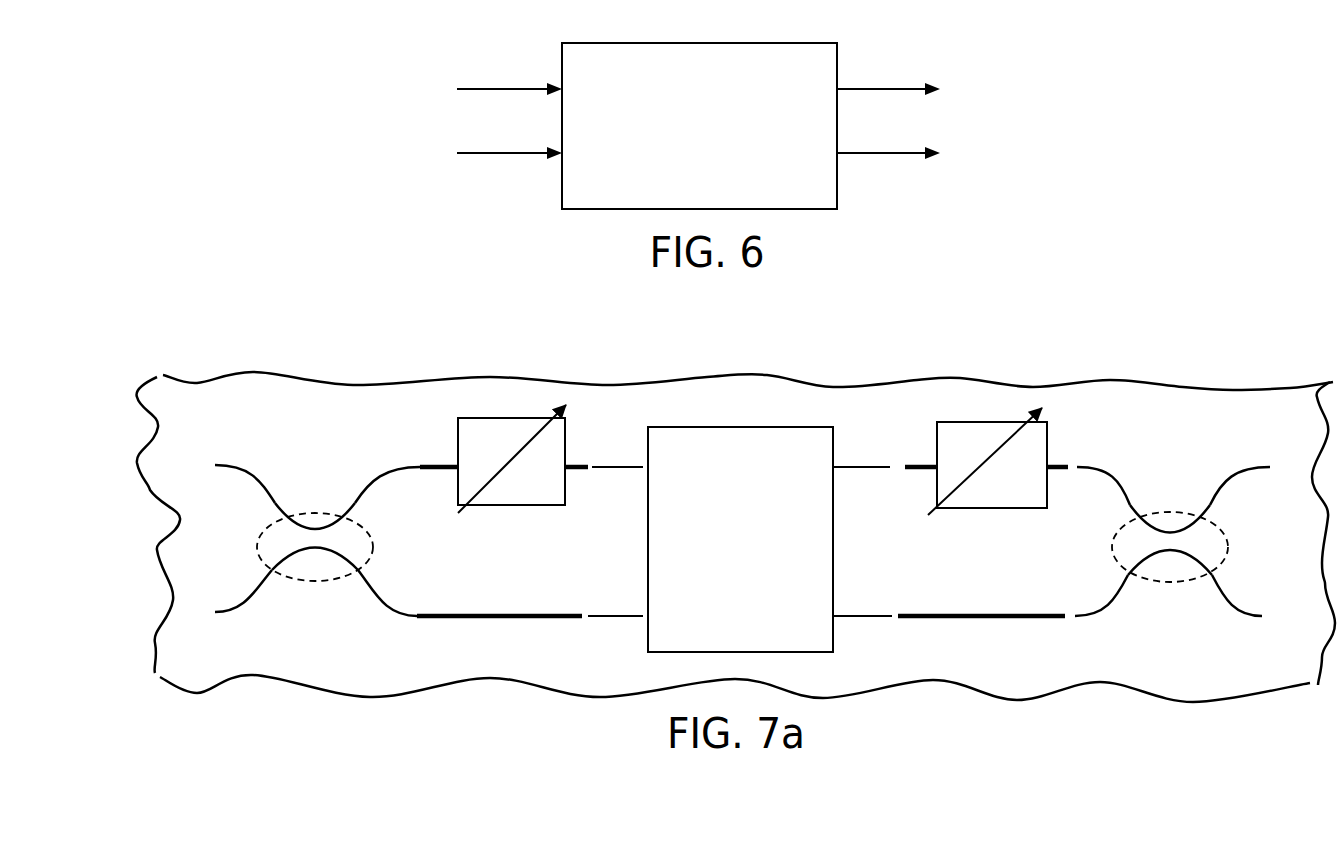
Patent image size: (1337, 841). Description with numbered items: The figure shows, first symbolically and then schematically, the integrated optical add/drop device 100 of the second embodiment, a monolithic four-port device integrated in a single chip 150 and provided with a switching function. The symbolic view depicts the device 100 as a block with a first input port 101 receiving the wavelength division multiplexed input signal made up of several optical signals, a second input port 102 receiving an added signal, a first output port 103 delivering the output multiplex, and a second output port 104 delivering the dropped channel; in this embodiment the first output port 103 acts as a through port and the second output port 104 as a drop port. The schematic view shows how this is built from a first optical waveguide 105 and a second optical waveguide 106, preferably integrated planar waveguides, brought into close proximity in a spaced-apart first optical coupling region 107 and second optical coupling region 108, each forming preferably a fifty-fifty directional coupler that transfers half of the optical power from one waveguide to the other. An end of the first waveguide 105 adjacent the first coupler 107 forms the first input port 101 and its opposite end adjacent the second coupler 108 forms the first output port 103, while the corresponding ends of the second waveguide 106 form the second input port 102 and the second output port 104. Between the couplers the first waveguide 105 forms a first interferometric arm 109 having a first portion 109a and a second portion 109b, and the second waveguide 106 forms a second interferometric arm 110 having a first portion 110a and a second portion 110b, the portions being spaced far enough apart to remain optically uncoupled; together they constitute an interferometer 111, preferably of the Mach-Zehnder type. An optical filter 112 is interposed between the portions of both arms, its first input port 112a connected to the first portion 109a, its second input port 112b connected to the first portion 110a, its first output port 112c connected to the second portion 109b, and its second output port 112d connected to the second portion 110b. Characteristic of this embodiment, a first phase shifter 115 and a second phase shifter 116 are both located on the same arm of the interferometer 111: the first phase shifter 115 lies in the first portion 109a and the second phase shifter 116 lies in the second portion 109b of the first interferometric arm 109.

In FIG. 6, the integrated optical add/drop device 100 is at (720, 62).
In FIG. 7a, the integrated optical add/drop device 100 is at (1212, 352).
In FIG. 6, the first input port 101 is at (500, 88).
In FIG. 7a, the first input port 101 is at (218, 466).
In FIG. 6, the second input port 102 is at (510, 153).
In FIG. 7a, the second input port 102 is at (233, 612).
In FIG. 6, the first output port 103 is at (888, 88).
In FIG. 7a, the first output port 103 is at (1283, 470).
In FIG. 6, the second output port 104 is at (908, 153).
In FIG. 7a, the second output port 104 is at (1258, 612).
In FIG. 7a, the first optical waveguide 105 is at (267, 505).
In FIG. 7a, the second optical waveguide 106 is at (1102, 610).
In FIG. 7a, the first optical coupling region 107 is at (322, 565).
In FIG. 7a, the second optical coupling region 108 is at (1173, 572).
In FIG. 7a, the first interferometric arm 109 is at (447, 471).
In FIG. 7a, the first portion of the first interferometric arm 109a is at (440, 466).
In FIG. 7a, the second portion of the first interferometric arm 109b is at (912, 473).
In FIG. 7a, the second interferometric arm 110 is at (563, 638).
In FIG. 7a, the first portion of the second interferometric arm 110a is at (497, 620).
In FIG. 7a, the second portion of the second interferometric arm 110b is at (962, 620).
In FIG. 7a, the interferometer 111 is at (615, 400).
In FIG. 7a, the optical filter 112 is at (720, 440).
In FIG. 7a, the first input port of the optical filter 112a is at (622, 468).
In FIG. 7a, the second input port of the optical filter 112b is at (613, 617).
In FIG. 7a, the first output port of the optical filter 112c is at (860, 468).
In FIG. 7a, the second output port of the optical filter 112d is at (872, 627).
In FIG. 7a, the first phase shifter 115 is at (480, 430).
In FIG. 7a, the second phase shifter 116 is at (970, 438).
In FIG. 7a, the chip 150 is at (288, 645).